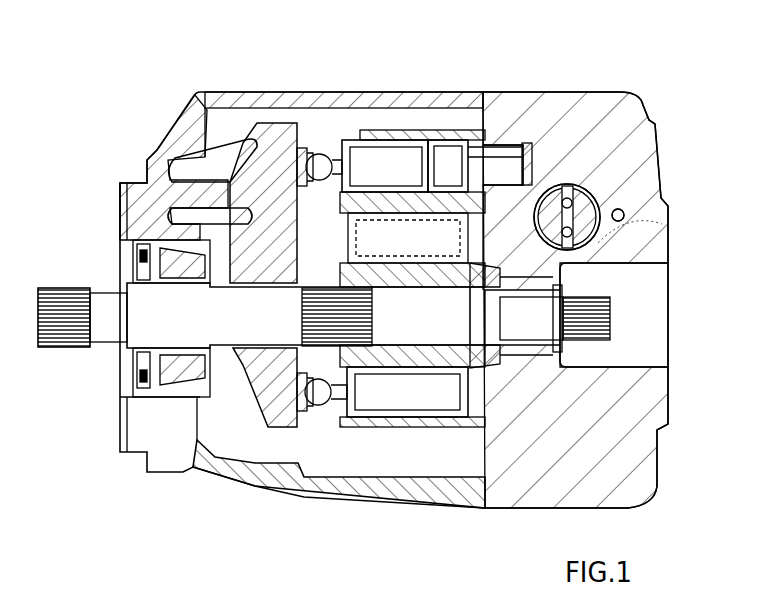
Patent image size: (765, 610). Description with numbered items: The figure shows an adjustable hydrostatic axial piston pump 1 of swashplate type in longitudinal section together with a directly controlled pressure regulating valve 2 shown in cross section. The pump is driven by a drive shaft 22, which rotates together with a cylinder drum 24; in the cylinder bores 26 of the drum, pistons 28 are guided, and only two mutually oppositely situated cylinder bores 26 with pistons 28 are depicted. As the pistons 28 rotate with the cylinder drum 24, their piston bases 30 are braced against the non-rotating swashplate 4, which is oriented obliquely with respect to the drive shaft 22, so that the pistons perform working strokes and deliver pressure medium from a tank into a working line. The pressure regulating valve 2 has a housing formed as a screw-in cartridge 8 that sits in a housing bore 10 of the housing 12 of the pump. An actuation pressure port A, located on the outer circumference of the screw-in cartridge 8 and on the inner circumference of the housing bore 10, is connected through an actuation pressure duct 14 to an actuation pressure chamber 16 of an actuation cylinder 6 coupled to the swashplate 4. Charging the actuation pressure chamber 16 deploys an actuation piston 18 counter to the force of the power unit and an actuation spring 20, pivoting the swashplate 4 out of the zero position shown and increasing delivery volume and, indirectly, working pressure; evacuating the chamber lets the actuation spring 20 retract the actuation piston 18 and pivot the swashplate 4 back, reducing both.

The axial piston pump 1 is at (133, 97).
The pressure regulating valve 2 is at (419, 258).
The swashplate 4 is at (258, 440).
The actuation cylinder 6 is at (418, 137).
The screw-in cartridge 8 is at (610, 137).
The housing bore 10 is at (607, 238).
The housing 12 is at (620, 395).
The actuation pressure duct 14 is at (545, 147).
The actuation pressure chamber 16 is at (452, 157).
The actuation piston 18 is at (382, 128).
The actuation spring 20 is at (222, 163).
The drive shaft 22 is at (43, 288).
The cylinder drum 24 is at (468, 420).
The cylinder bores 26 is at (412, 420).
The pistons 28 is at (368, 425).
The piston bases 30 is at (302, 423).
The actuation pressure port A is at (575, 187).